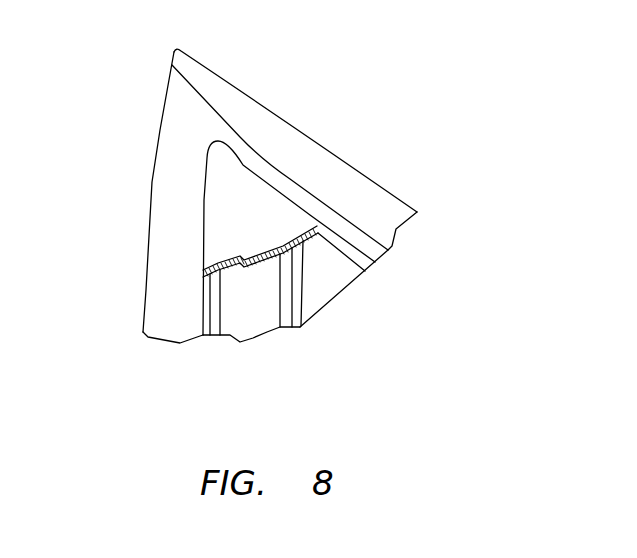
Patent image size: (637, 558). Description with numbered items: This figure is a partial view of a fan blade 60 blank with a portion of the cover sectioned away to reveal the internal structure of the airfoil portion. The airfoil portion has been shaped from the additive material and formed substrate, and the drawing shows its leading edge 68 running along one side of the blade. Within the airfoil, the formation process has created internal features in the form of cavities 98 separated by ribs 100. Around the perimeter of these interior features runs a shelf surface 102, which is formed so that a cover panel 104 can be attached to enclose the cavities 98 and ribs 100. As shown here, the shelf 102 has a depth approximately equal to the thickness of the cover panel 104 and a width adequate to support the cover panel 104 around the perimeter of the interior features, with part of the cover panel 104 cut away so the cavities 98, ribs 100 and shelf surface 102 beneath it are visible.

The fan blade 60 is at (396, 77).
The leading edge 68 is at (152, 182).
The cavities 98 is at (230, 322).
The ribs 100 is at (303, 327).
The shelf surface 102 is at (197, 303).
The cover panel 104 is at (252, 190).